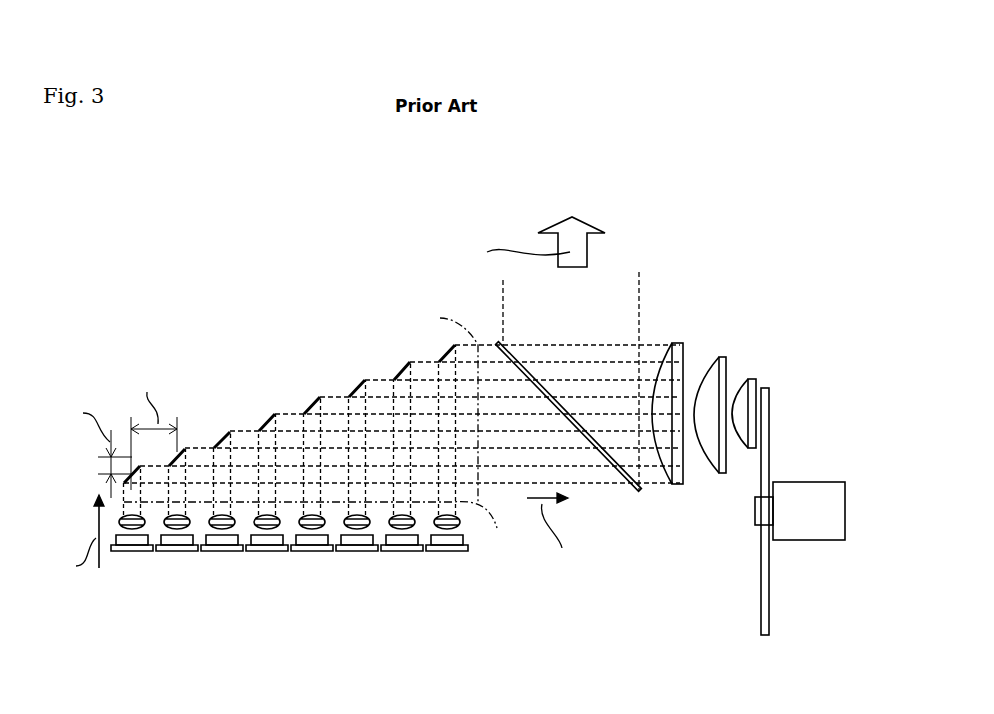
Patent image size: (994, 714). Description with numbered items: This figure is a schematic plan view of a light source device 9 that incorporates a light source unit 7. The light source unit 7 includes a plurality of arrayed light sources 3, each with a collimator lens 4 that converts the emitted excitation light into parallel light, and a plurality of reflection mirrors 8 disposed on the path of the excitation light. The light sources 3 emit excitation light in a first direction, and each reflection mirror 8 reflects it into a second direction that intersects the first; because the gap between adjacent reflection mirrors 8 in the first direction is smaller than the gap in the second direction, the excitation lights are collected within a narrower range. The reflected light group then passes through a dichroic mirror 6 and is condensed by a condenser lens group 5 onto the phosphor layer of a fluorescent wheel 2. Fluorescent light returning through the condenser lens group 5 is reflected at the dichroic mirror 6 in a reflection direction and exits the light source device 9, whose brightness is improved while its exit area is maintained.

The fluorescent wheel 2 is at (766, 443).
The light source 3 is at (406, 541).
The collimator lens 4 is at (396, 532).
The condenser lens group 5 is at (757, 336).
The dichroic mirror 6 is at (620, 478).
The light source unit 7 is at (292, 572).
The reflection mirror 8 is at (272, 412).
The light source device 9 is at (627, 235).